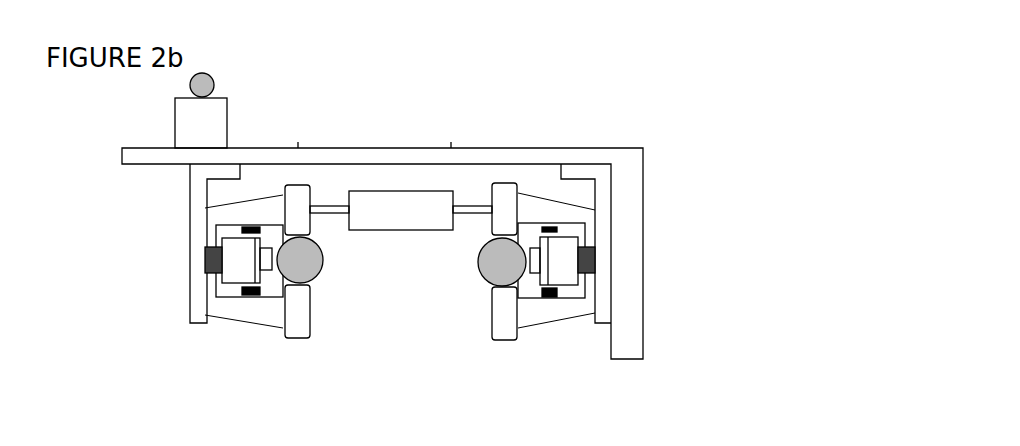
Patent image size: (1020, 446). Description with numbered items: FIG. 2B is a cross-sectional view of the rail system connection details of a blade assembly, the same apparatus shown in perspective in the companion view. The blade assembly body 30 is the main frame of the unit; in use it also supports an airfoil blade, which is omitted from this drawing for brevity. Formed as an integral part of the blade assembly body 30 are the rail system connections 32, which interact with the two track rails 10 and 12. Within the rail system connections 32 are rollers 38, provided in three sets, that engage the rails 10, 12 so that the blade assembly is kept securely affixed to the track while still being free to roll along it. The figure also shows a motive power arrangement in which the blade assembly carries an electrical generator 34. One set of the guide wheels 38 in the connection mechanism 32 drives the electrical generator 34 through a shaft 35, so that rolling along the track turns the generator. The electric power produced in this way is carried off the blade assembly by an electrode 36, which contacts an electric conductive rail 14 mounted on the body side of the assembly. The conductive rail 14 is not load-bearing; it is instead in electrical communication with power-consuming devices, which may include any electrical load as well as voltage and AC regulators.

The rail 10 is at (320, 289).
The rail 12 is at (478, 288).
The electric conductive rail 14 is at (188, 86).
The blade assembly body 30 is at (647, 212).
The rail system connection 32 is at (553, 321).
The electrical generator 34 is at (409, 189).
The shaft 35 is at (330, 204).
The electrode 36 is at (174, 118).
The rollers 38 is at (282, 205).